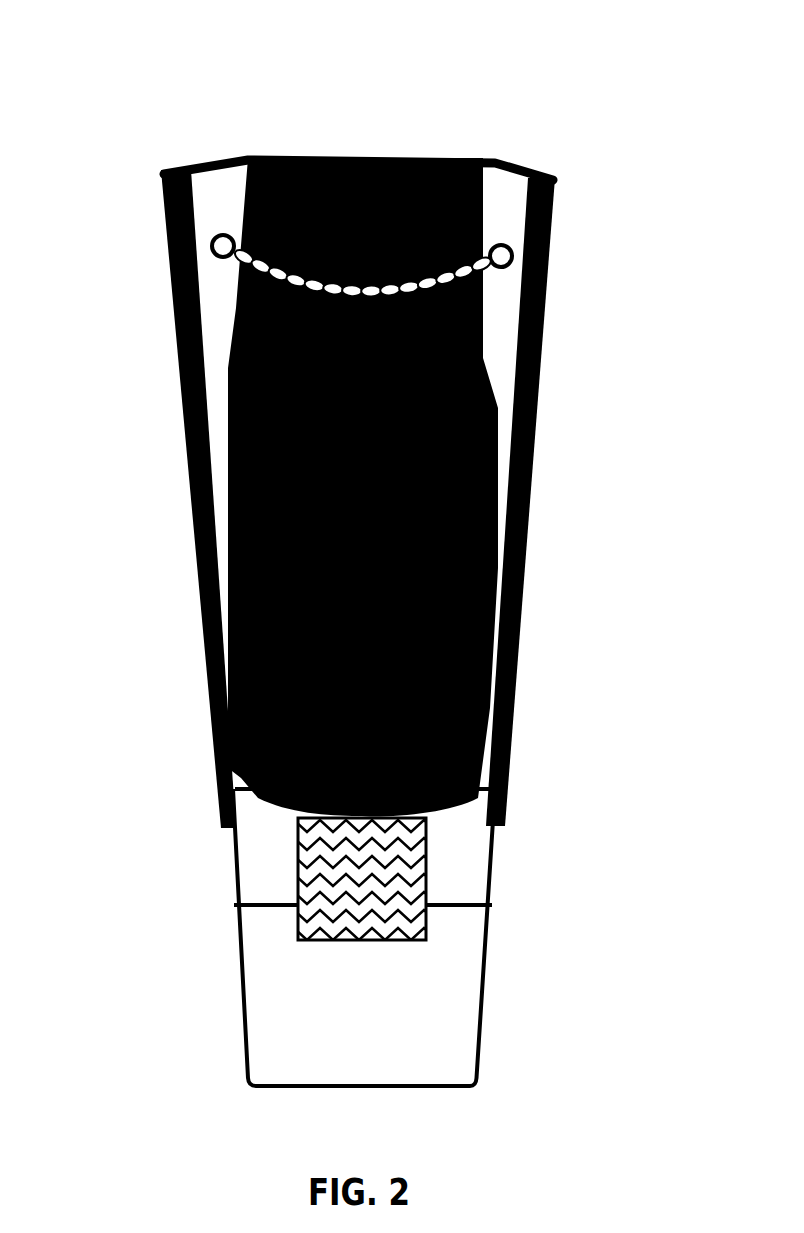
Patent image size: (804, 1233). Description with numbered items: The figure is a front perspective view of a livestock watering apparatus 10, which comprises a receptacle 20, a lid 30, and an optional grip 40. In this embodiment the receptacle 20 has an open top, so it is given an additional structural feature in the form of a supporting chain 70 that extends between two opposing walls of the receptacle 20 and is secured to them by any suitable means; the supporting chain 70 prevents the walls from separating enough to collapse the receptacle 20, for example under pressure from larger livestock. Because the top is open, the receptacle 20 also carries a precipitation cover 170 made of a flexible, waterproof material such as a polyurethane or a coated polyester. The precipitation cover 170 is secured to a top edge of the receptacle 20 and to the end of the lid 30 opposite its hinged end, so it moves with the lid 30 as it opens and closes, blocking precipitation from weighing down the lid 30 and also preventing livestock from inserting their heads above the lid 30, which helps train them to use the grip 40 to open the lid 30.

The watering apparatus 10 is at (368, 553).
The receptacle 20 is at (540, 258).
The lid 30 is at (236, 873).
The grip 40 is at (290, 918).
The supporting chain 70 is at (204, 240).
The precipitation cover 170 is at (422, 556).